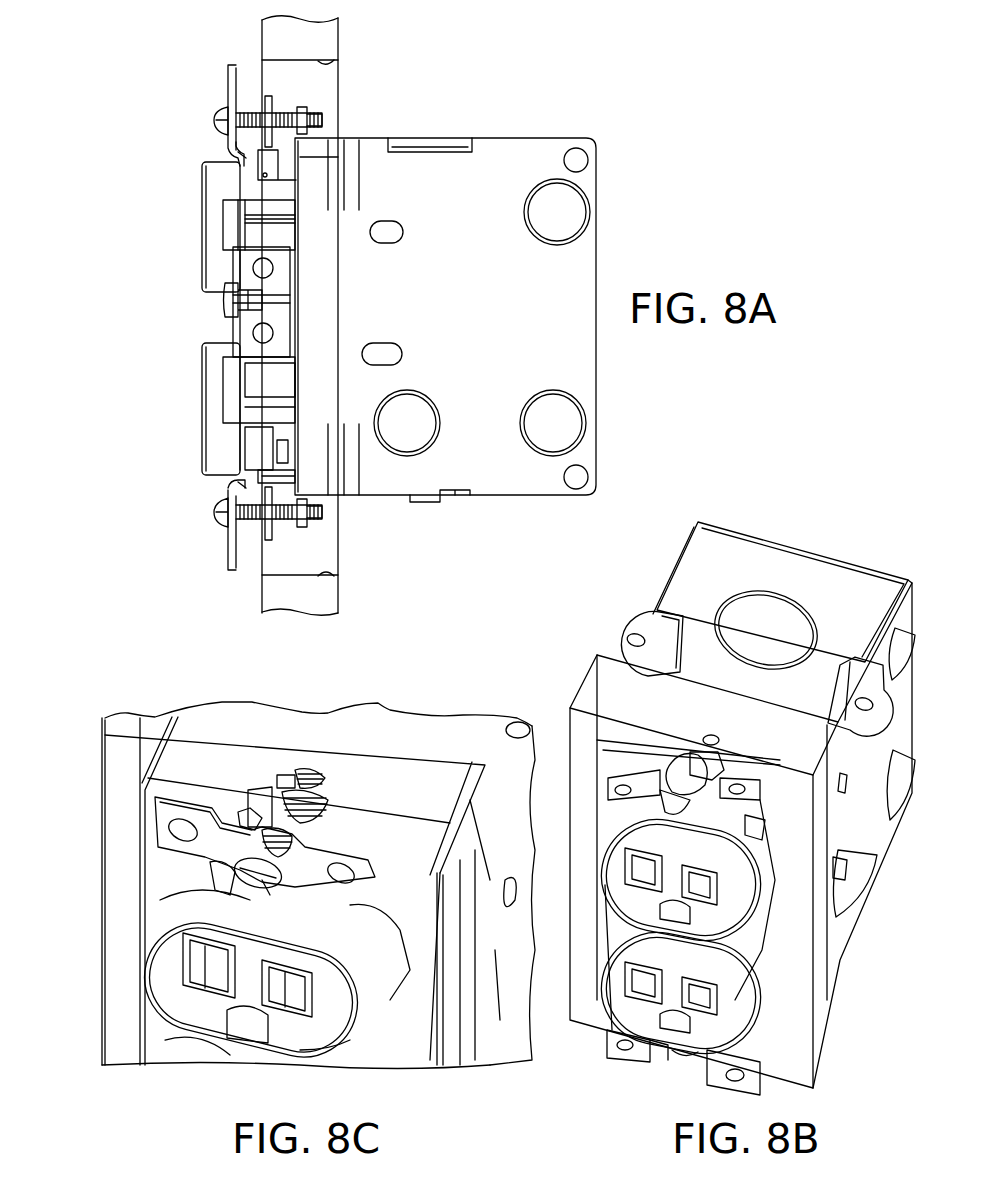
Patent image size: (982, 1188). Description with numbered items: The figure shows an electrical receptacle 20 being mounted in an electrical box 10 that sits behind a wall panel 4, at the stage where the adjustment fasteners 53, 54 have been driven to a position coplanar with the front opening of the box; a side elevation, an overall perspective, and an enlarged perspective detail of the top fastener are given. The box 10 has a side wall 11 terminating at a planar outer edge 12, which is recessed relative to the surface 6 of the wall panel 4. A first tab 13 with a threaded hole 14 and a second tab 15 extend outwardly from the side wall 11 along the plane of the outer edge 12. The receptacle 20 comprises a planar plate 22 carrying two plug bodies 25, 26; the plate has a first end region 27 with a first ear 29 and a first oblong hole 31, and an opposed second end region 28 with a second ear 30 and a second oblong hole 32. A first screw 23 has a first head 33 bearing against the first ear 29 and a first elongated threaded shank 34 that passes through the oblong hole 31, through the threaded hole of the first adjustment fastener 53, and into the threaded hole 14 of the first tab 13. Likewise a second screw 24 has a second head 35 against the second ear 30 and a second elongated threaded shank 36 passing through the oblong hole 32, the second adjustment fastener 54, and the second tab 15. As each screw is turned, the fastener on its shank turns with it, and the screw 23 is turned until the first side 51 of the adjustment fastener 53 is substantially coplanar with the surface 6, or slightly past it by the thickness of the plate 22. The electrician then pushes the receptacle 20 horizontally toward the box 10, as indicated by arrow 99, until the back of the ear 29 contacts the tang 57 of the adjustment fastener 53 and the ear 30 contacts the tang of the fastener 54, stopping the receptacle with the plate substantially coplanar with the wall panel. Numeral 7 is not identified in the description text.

In FIG. 8A, the wall panel 4 is at (343, 37).
In FIG. 8A, the surface of wall panel 6 is at (262, 33).
In FIG. 8A, the mounting bracket 7 is at (334, 60).
In FIG. 8B, the mounting bracket 7 is at (610, 675).
In FIG. 8C, the mounting bracket 7 is at (117, 760).
In FIG. 8A, the electrical box 10 is at (604, 250).
In FIG. 8B, the electrical box 10 is at (757, 784).
In FIG. 8C, the electrical box 10 is at (317, 853).
In FIG. 8A, the side wall 11 is at (512, 147).
In FIG. 8B, the side wall 11 is at (900, 728).
In FIG. 8C, the side wall 11 is at (300, 723).
In FIG. 8A, the outer edge 12 is at (297, 232).
In FIG. 8C, the outer edge 12 is at (145, 922).
In FIG. 8A, the first tab 13 is at (308, 110).
In FIG. 8B, the first tab 13 is at (727, 753).
In FIG. 8C, the first tab 13 is at (288, 782).
In FIG. 8C, the threaded hole 14 is at (302, 802).
In FIG. 8A, the second tab 15 is at (308, 524).
In FIG. 8A, the electrical receptacle 20 is at (210, 322).
In FIG. 8A, the planar plate 22 is at (224, 89).
In FIG. 8A, the first screw 23 is at (245, 110).
In FIG. 8A, the second screw 24 is at (245, 530).
In FIG. 8A, the plug body 25 is at (237, 193).
In FIG. 8B, the plug body 25 is at (722, 931).
In FIG. 8C, the plug body 25 is at (309, 1047).
In FIG. 8A, the plug body 26 is at (237, 421).
In FIG. 8B, the plug body 26 is at (724, 1038).
In FIG. 8A, the first end region 27 is at (236, 150).
In FIG. 8B, the first end region 27 is at (648, 803).
In FIG. 8C, the first end region 27 is at (208, 872).
In FIG. 8A, the second end region 28 is at (234, 482).
In FIG. 8B, the second end region 28 is at (648, 1027).
In FIG. 8A, the first ear 29 is at (228, 144).
In FIG. 8B, the first ear 29 is at (657, 792).
In FIG. 8C, the first ear 29 is at (228, 867).
In FIG. 8A, the second ear 30 is at (228, 490).
In FIG. 8B, the second ear 30 is at (655, 1037).
In FIG. 8B, the first oblong hole 31 is at (717, 795).
In FIG. 8C, the first oblong hole 31 is at (282, 875).
In FIG. 8B, the second oblong hole 32 is at (692, 1047).
In FIG. 8A, the first head 33 is at (216, 116).
In FIG. 8B, the first head 33 is at (757, 833).
In FIG. 8C, the first head 33 is at (268, 880).
In FIG. 8A, the first elongated threaded shank 34 is at (323, 121).
In FIG. 8B, the first elongated threaded shank 34 is at (711, 733).
In FIG. 8C, the first elongated threaded shank 34 is at (303, 770).
In FIG. 8A, the second head 35 is at (216, 508).
In FIG. 8B, the second head 35 is at (685, 1052).
In FIG. 8A, the second elongated threaded shank 36 is at (323, 512).
In FIG. 8C, the first side of adjustment fastener 51 is at (265, 823).
In FIG. 8A, the first adjustment fastener 53 is at (269, 98).
In FIG. 8B, the first adjustment fastener 53 is at (685, 765).
In FIG. 8C, the first adjustment fastener 53 is at (242, 817).
In FIG. 8A, the second adjustment fastener 54 is at (272, 536).
In FIG. 8C, the tang 57 is at (298, 845).
In FIG. 8C, the arrow 99 is at (382, 888).